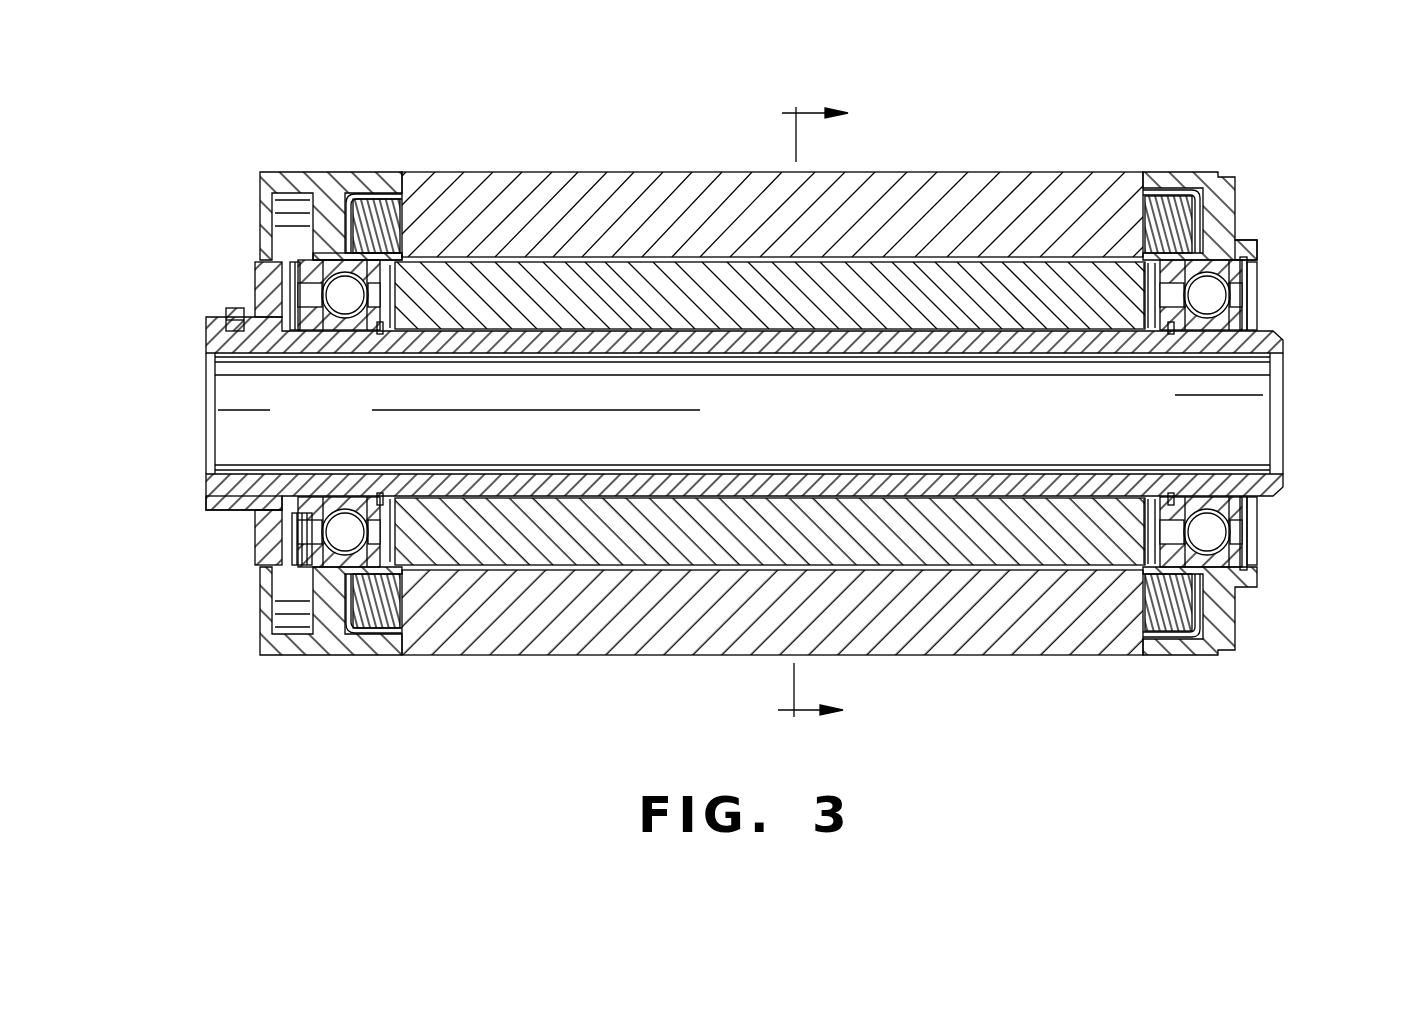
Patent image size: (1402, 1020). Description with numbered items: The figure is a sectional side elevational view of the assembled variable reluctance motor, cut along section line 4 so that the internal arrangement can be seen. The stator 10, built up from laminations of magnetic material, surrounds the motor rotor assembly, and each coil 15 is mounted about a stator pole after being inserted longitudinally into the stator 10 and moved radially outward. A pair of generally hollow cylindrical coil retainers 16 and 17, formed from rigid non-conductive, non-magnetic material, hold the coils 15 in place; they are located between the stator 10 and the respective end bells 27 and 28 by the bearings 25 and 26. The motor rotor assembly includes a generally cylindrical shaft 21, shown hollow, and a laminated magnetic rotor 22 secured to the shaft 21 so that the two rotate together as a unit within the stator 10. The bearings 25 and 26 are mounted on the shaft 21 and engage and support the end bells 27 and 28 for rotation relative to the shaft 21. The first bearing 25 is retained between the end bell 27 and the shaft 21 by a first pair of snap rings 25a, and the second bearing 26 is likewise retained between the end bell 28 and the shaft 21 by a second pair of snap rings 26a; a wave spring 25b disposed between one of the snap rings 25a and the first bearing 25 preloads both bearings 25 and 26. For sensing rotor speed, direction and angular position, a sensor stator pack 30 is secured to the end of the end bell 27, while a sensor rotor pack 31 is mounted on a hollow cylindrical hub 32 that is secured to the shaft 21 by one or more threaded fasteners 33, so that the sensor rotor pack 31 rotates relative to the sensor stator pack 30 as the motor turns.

The section line 4- 4 is at (804, 414).
The stator 10 is at (1013, 187).
The coil 15 is at (1187, 220).
The coil retainer 16 is at (345, 258).
The coil retainer 17 is at (1200, 260).
The shaft 21 is at (1222, 485).
The rotor 22 is at (983, 552).
The bearing 25 is at (343, 305).
The snap ring 25a is at (292, 270).
The wave spring 25b is at (303, 513).
The bearing 26 is at (1248, 302).
The snap ring 26a is at (1248, 274).
The end bell 27 is at (337, 185).
The end bell 28 is at (1222, 182).
The sensor stator pack 30 is at (262, 603).
The sensor rotor pack 31 is at (265, 533).
The hub 32 is at (233, 506).
The threaded fastener 33 is at (230, 310).